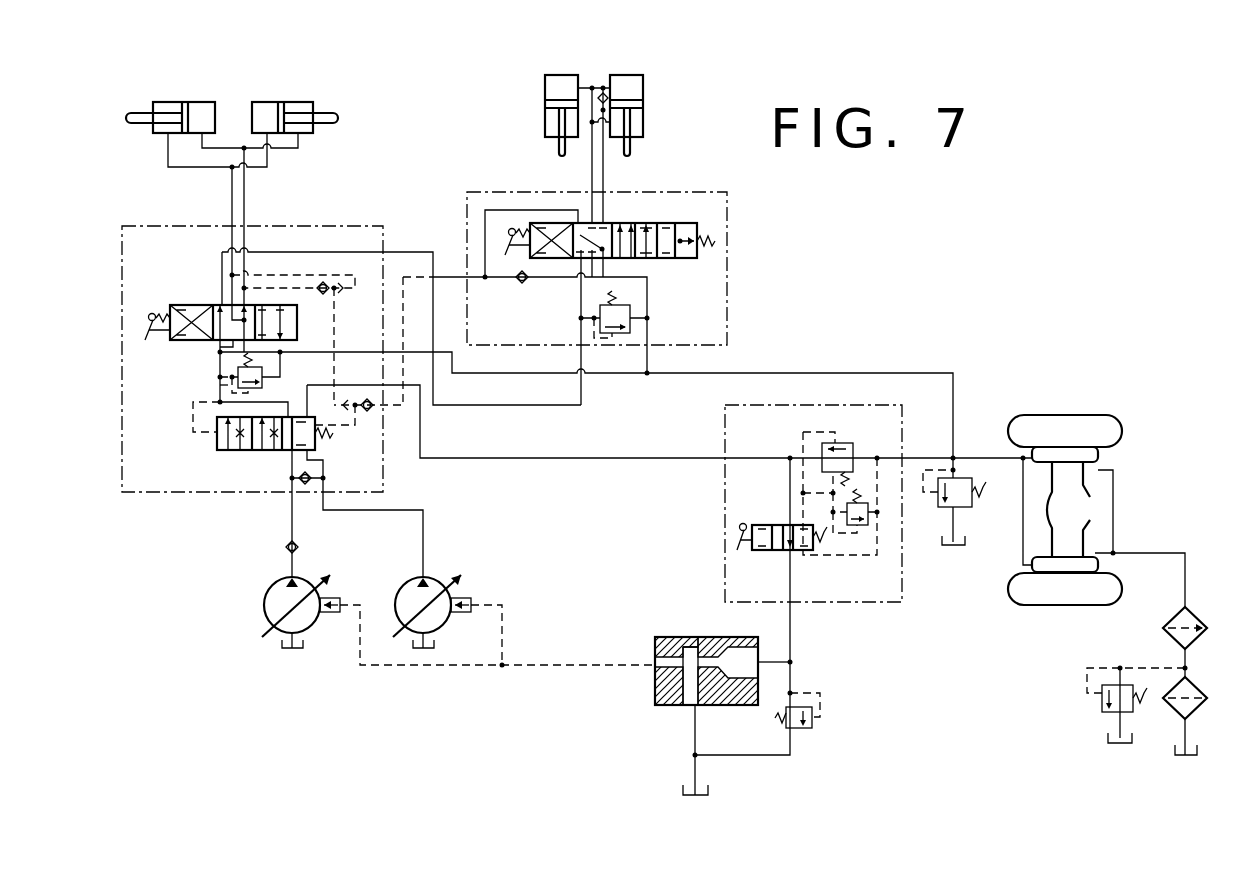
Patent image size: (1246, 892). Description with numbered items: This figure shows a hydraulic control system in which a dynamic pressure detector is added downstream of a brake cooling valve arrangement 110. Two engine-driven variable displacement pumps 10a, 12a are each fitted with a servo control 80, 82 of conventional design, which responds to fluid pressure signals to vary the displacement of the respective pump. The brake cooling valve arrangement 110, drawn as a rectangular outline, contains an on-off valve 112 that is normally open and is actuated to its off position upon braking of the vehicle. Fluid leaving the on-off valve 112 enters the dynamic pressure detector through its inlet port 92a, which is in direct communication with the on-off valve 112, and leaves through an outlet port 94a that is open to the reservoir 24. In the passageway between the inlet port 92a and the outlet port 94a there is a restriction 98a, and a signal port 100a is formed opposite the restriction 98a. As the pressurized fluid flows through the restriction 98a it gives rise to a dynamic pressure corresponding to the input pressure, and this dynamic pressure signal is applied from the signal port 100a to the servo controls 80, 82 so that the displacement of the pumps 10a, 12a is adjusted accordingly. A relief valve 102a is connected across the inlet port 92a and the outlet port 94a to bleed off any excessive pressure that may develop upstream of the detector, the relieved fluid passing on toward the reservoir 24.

The variable displacement pump 10a is at (266, 598).
The variable displacement pump 12a is at (405, 585).
The servo control 80 is at (331, 613).
The servo control 82 is at (462, 613).
The brake cooling valve arrangement 110 is at (723, 534).
The on-off valve 112 is at (770, 550).
The restriction 98a is at (711, 642).
The inlet port 92a is at (742, 650).
The signal port 100a is at (686, 670).
The outlet port 94a is at (690, 690).
The relief valve 102a is at (810, 729).
The reservoir 24 is at (710, 790).